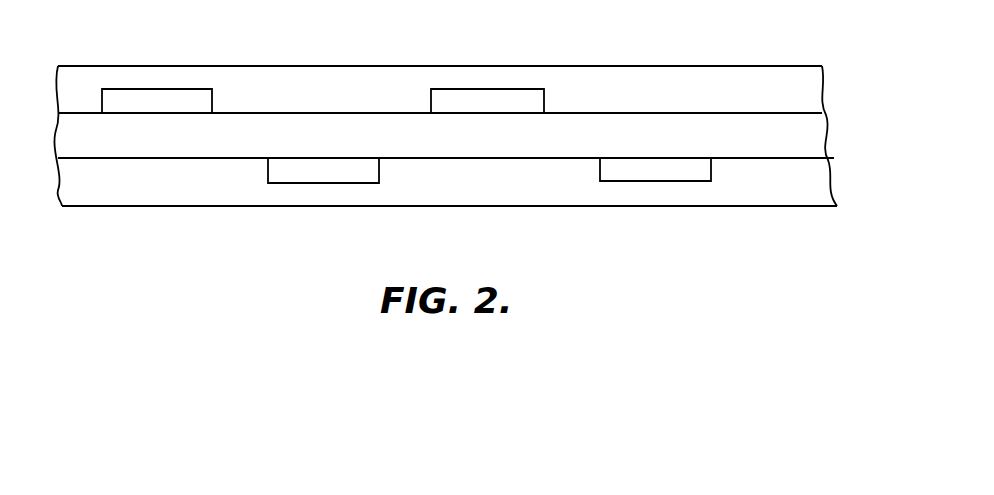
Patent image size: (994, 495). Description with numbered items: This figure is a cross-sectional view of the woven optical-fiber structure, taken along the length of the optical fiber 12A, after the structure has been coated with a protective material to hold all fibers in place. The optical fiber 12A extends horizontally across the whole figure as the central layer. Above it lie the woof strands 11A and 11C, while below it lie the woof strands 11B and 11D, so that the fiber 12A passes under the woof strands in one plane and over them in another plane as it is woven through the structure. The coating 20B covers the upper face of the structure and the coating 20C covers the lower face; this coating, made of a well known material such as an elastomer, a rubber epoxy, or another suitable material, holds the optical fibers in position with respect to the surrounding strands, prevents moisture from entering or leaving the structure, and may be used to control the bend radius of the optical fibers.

The woof strand 11A is at (148, 105).
The woof strand 11B is at (321, 175).
The woof strand 11C is at (508, 103).
The woof strand 11D is at (645, 168).
The optical fiber 12A is at (812, 137).
The coating 20B is at (812, 98).
The coating 20C is at (814, 186).